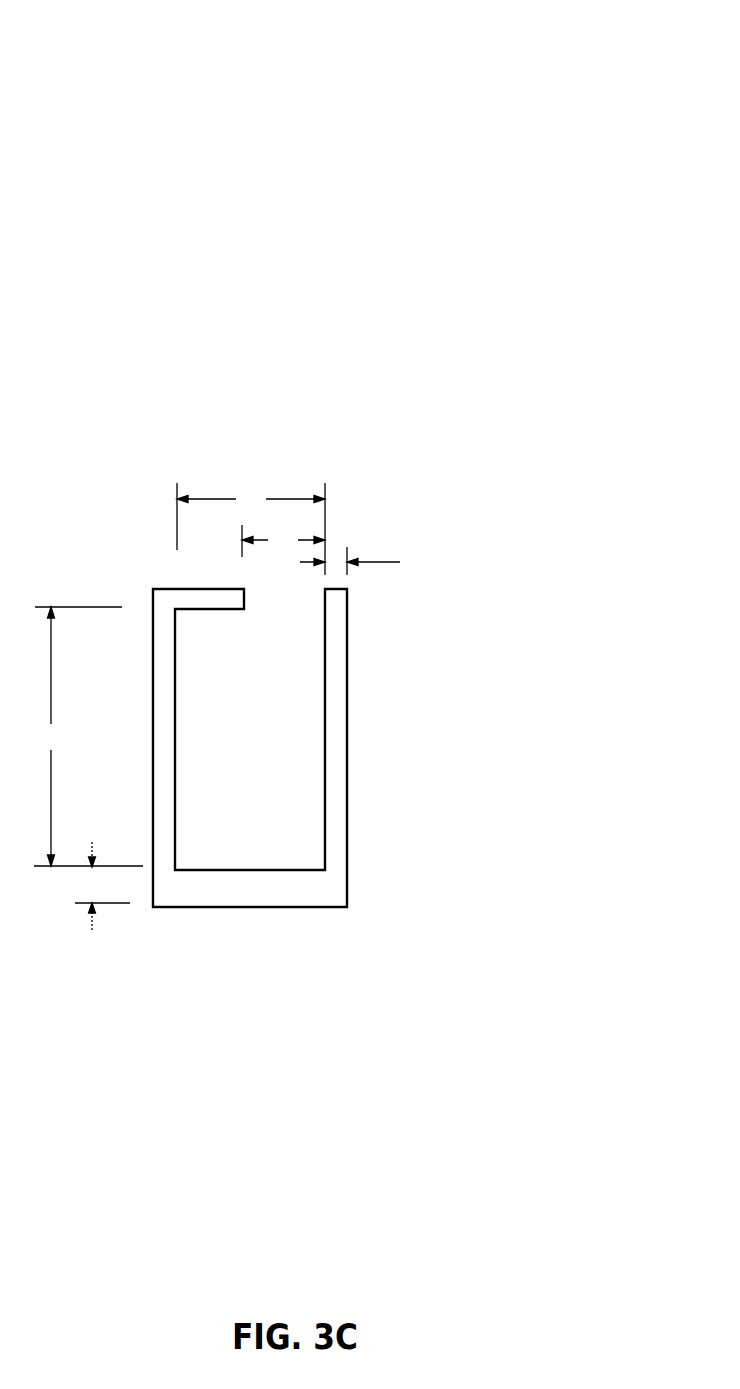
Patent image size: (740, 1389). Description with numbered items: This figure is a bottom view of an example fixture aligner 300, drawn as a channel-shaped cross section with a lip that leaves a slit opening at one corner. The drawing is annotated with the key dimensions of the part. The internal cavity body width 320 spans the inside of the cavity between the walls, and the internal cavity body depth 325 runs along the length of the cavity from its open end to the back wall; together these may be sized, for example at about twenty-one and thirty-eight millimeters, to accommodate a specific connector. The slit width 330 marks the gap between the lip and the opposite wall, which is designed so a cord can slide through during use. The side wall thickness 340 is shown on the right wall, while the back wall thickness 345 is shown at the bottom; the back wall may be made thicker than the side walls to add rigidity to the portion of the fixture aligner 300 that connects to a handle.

The fixture aligner 300 is at (547, 42).
The internal cavity body width 320 is at (251, 529).
The internal cavity body depth 325 is at (88, 736).
The slit width 330 is at (283, 541).
The side wall thickness 340 is at (363, 561).
The back wall thickness 345 is at (102, 886).